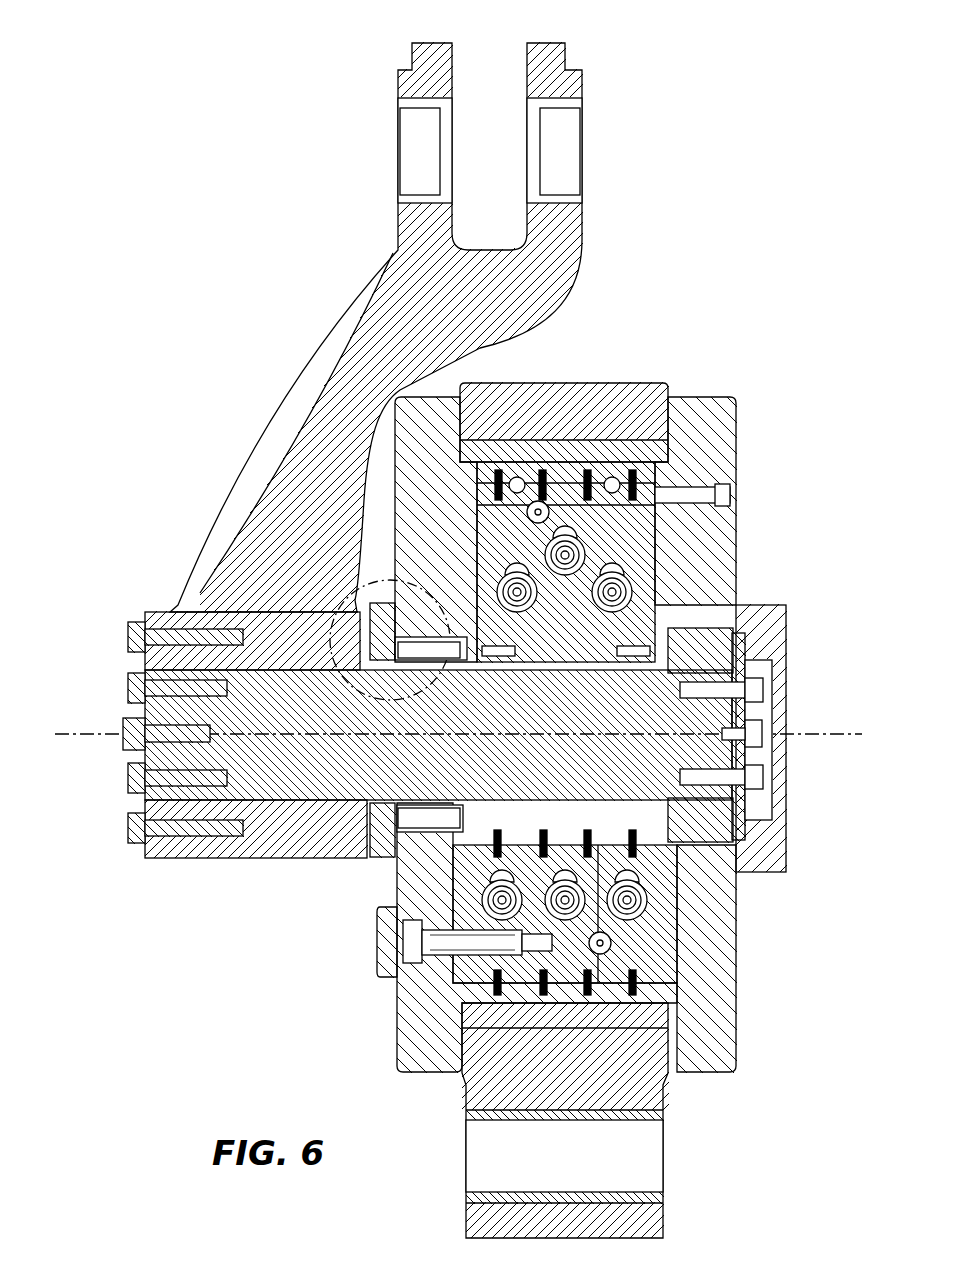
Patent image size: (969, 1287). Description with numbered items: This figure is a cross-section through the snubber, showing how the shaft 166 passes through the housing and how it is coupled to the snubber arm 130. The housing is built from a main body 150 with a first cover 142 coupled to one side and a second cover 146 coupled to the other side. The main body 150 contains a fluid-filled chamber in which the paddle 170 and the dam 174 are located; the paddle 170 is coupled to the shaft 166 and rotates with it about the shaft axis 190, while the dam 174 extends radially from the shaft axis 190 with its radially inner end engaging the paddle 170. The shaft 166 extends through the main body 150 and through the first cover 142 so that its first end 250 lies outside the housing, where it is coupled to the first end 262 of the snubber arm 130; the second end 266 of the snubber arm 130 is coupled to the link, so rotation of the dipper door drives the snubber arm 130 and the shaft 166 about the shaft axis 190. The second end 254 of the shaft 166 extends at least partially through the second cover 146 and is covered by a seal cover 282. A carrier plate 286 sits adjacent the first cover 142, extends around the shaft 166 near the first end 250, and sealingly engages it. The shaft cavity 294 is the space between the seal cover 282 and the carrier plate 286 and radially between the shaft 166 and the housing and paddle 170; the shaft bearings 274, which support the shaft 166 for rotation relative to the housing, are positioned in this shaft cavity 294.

The snubber arm 130 is at (303, 341).
The second end of the snubber arm 266 is at (568, 50).
The paddle 170 is at (646, 460).
The shaft 166 is at (615, 650).
The shaft cavity 294 is at (449, 648).
The seal cover 282 is at (772, 618).
The shaft bearings 274 is at (420, 908).
The shaft axis 190 is at (100, 734).
The first end of the shaft 250 is at (142, 755).
The first end of the snubber arm 262 is at (205, 862).
The carrier plate 286 is at (383, 853).
The dam 174 is at (652, 953).
The first cover 142 is at (417, 1030).
The second cover 146 is at (708, 1062).
The main body 150 is at (500, 1088).
The second end of the shaft 254 is at (743, 753).